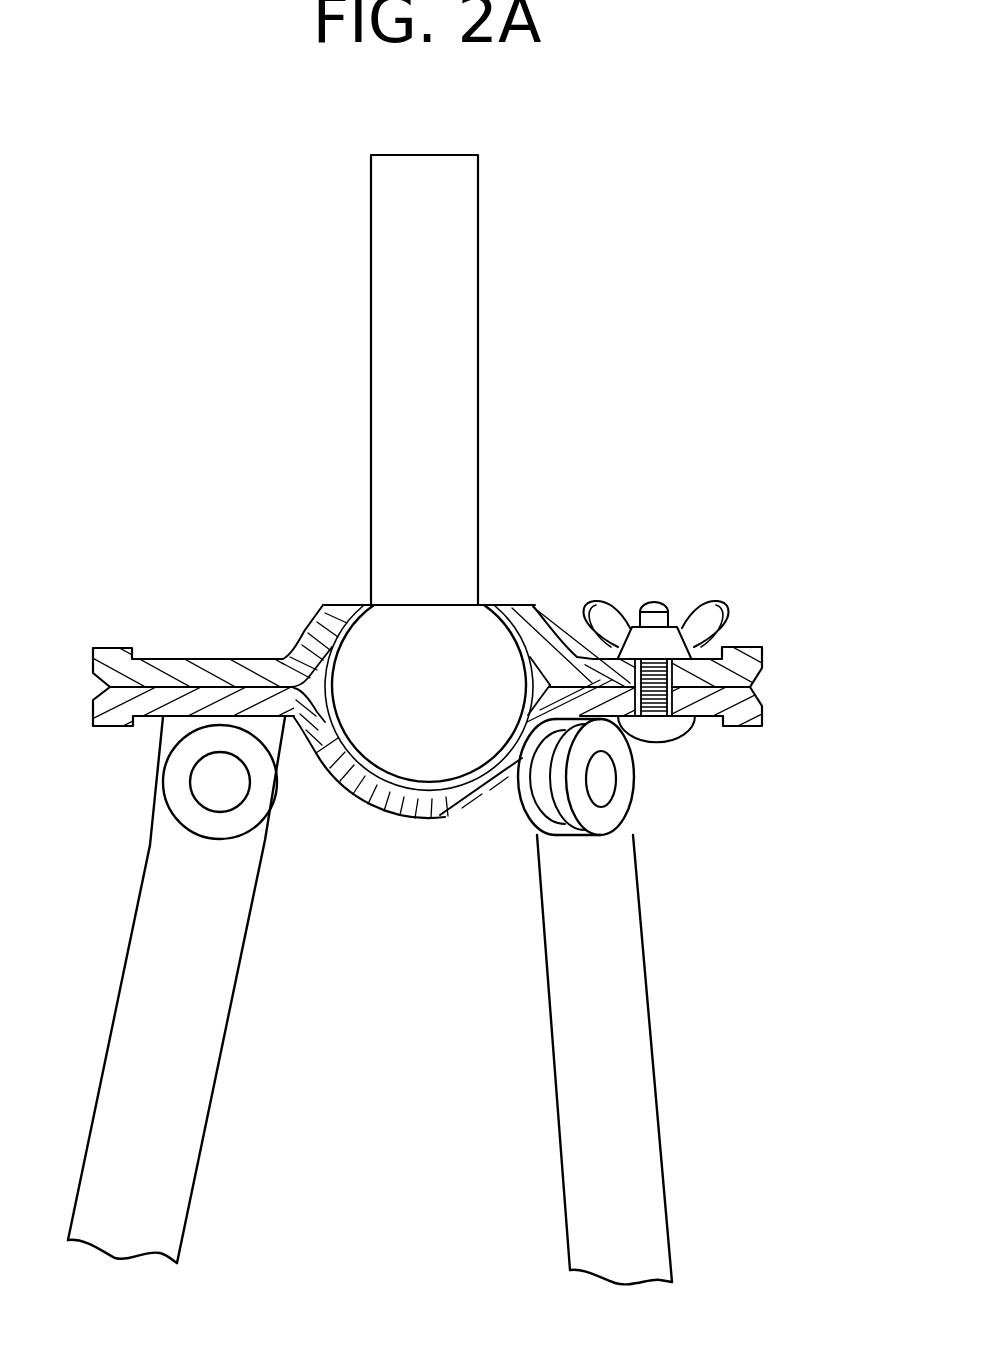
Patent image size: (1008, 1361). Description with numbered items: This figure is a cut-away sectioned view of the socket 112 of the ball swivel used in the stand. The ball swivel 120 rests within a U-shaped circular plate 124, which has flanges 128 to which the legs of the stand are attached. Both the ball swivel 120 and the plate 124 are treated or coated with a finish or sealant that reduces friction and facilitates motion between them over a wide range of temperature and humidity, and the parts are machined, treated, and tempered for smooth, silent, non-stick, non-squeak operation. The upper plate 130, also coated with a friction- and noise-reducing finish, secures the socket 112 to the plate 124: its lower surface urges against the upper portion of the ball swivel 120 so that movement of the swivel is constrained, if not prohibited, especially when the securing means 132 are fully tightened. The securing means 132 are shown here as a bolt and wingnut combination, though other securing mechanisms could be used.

The socket 112 is at (377, 375).
The ball swivel 120 is at (408, 627).
The U-shaped circular plate 124 is at (402, 803).
The flanges 128 is at (168, 700).
The upper plate 130 is at (197, 668).
The securing means 132 is at (727, 601).